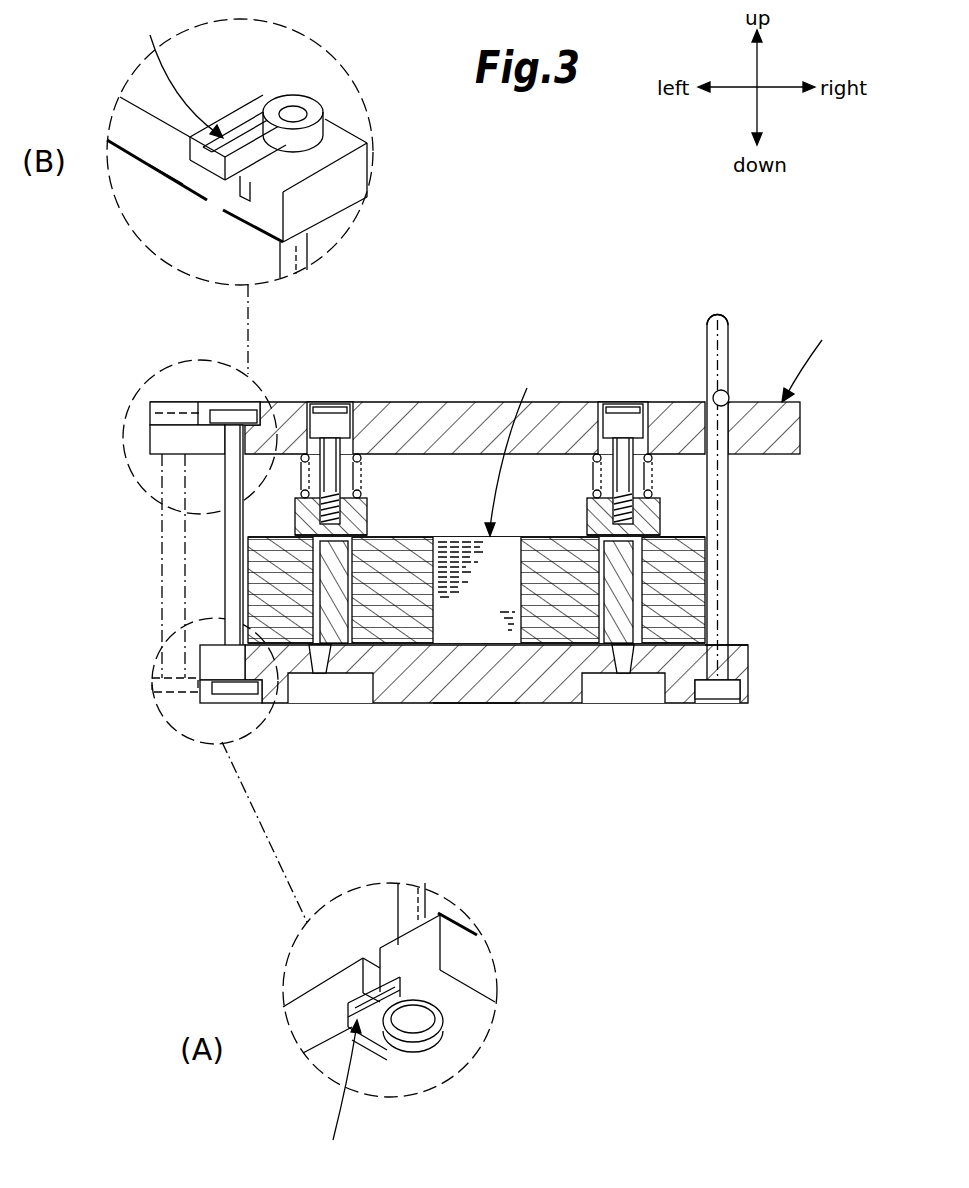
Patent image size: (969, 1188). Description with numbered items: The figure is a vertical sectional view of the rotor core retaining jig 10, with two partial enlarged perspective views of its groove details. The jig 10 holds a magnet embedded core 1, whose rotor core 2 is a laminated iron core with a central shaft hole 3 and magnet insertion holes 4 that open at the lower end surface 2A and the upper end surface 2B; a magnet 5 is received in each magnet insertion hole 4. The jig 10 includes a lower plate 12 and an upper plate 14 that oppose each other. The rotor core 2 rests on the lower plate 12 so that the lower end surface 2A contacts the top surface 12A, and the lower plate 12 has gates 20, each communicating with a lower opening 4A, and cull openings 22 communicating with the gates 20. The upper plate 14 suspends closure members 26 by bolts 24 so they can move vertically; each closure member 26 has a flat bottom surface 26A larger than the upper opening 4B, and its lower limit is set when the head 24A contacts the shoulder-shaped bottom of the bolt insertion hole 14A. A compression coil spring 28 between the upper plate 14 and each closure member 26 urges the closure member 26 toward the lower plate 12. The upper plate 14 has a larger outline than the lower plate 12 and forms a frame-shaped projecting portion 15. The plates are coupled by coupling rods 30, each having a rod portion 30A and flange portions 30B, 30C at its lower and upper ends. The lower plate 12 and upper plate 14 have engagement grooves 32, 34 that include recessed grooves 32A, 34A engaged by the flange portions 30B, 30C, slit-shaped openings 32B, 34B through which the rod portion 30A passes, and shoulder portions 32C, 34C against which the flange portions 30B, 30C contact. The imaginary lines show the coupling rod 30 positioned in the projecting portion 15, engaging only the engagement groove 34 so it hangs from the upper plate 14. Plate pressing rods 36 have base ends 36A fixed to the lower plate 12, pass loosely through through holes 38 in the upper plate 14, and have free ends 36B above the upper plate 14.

The magnet embedded core 1 is at (509, 448).
The rotor core 2 is at (673, 530).
The lower end surface 2A is at (447, 644).
The upper end surface 2B is at (292, 535).
The shaft hole 3 is at (506, 588).
The magnet insertion hole 4 is at (327, 582).
The lower opening 4A is at (717, 644).
The upper opening 4B is at (660, 537).
The magnet 5 is at (247, 562).
The rotor core retaining jig 10 is at (810, 357).
The lower plate 12 is at (433, 690).
The top surface 12A is at (490, 648).
The upper plate 14 is at (456, 402).
The bolt insertion hole 14A is at (344, 402).
The projecting portion 15 is at (177, 400).
The gate 20 is at (315, 675).
The cull opening 22 is at (362, 703).
The bolt 24 is at (289, 402).
The head 24A is at (330, 404).
The closure member 26 is at (366, 512).
The bottom surface 26A is at (372, 531).
The compression coil spring 28 is at (650, 454).
The coupling rod 30 is at (228, 542).
The rod portion 30A is at (307, 244).
The flange portion 30B is at (228, 690).
The flange portion 30C is at (300, 110).
The engagement groove 32 is at (207, 660).
The recessed groove 32A is at (375, 1027).
The opening 32B is at (377, 957).
The shoulder portion 32C is at (400, 1018).
The engagement groove 34 is at (160, 440).
The recessed groove 34A is at (257, 113).
The opening 34B is at (222, 197).
The shoulder portion 34C is at (200, 196).
The plate pressing rod 36 is at (728, 492).
The base end 36A is at (720, 700).
The free end 36B is at (720, 315).
The through hole 38 is at (724, 392).